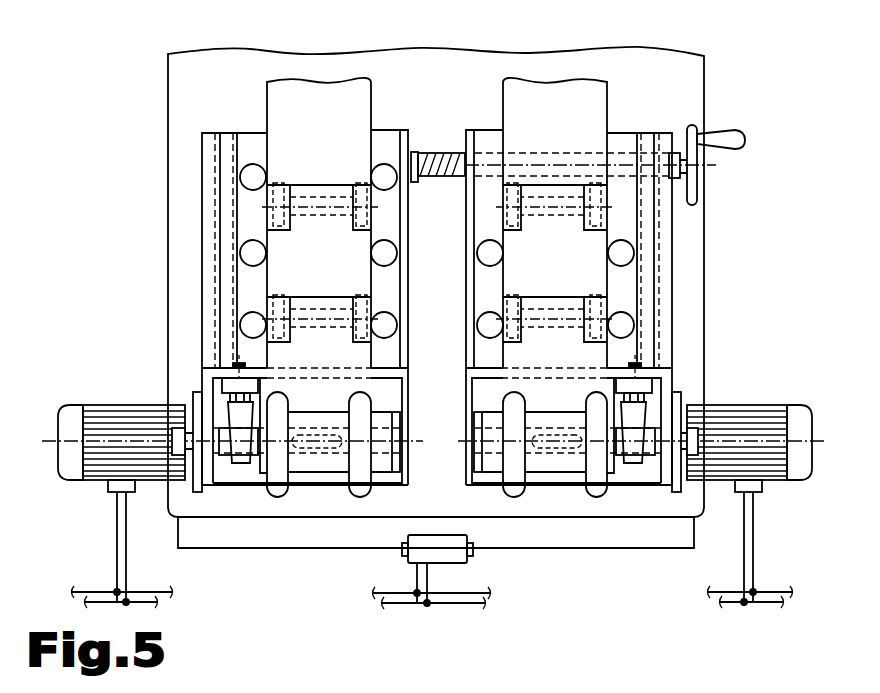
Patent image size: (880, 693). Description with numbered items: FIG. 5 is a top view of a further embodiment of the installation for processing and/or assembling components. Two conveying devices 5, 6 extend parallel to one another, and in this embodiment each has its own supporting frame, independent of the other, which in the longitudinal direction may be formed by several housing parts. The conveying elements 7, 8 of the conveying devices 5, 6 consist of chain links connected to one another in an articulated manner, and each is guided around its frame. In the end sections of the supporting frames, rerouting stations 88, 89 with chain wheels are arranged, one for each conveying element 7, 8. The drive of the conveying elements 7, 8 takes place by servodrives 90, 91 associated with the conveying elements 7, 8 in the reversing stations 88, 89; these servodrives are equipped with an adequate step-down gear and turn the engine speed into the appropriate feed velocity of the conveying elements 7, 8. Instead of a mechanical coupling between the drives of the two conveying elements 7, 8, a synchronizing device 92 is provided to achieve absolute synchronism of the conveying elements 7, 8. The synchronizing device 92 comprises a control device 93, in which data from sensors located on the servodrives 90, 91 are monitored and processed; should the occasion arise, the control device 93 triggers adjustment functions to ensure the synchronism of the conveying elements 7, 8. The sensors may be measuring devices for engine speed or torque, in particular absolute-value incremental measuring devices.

The conveying device 5 is at (303, 70).
The conveying device 6 is at (569, 64).
The conveying element 7 is at (342, 100).
The conveying element 8 is at (580, 112).
The rerouting station 88 is at (314, 502).
The rerouting station 89 is at (565, 502).
The servodrive 90 is at (105, 413).
The servodrive 91 is at (762, 412).
The synchronizing device 92 is at (386, 564).
The control device 93 is at (448, 552).